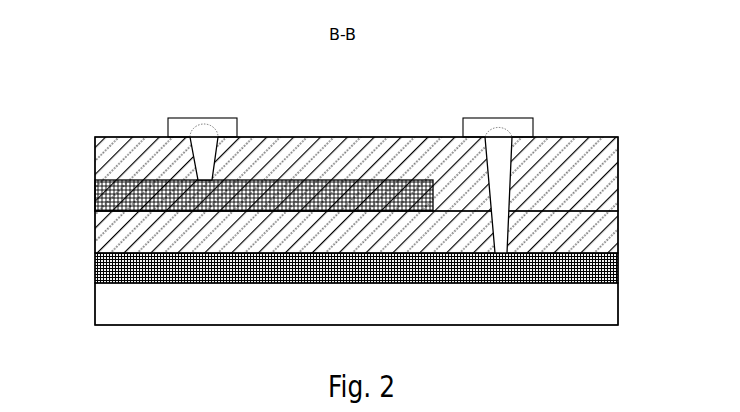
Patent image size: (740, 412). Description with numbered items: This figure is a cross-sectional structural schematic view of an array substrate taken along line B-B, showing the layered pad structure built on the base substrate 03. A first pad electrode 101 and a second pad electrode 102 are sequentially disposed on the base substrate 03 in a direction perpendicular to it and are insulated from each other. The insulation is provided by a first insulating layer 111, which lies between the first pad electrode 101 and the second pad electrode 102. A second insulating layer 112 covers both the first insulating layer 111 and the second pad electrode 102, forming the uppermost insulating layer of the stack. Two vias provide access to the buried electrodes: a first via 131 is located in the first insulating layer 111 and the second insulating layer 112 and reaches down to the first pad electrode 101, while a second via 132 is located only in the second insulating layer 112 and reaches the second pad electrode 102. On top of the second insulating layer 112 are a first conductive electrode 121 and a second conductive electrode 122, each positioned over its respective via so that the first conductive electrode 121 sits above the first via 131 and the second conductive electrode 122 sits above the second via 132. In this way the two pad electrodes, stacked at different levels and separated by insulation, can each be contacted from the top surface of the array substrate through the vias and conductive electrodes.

The base substrate 03 is at (608, 314).
The first pad electrode 101 is at (96, 270).
The first insulating layer 111 is at (117, 231).
The second pad electrode 102 is at (96, 196).
The second insulating layer 112 is at (115, 157).
The first conductive electrode 121 is at (533, 131).
The second conductive electrode 122 is at (237, 131).
The first via 131 is at (528, 152).
The second via 132 is at (236, 152).